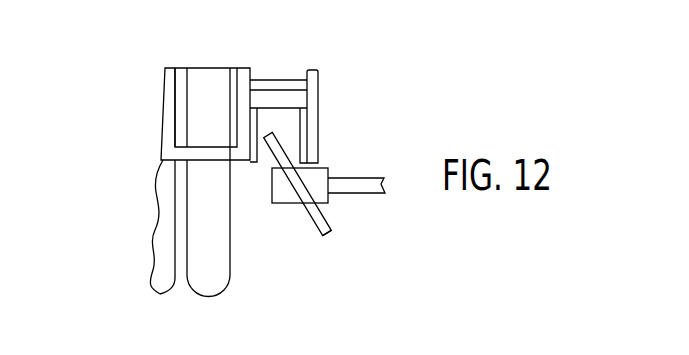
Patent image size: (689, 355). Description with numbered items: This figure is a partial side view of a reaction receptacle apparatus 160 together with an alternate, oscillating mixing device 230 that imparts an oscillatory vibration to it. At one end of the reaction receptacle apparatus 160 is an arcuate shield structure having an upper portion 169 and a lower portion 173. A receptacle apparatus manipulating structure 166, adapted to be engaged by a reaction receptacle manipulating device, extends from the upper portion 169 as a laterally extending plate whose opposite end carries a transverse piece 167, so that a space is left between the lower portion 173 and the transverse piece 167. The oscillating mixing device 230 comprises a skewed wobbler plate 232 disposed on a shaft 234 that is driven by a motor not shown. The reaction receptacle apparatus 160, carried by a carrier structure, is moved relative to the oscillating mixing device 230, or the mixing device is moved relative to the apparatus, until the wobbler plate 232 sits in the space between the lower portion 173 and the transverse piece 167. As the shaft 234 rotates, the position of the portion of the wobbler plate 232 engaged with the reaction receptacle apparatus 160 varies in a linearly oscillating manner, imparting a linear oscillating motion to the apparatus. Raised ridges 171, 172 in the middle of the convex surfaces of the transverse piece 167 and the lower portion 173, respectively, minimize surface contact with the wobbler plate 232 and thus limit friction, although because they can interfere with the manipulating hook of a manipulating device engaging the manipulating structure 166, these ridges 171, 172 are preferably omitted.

The reaction receptacle apparatus 160 is at (188, 63).
The receptacle apparatus manipulating structure 166 is at (329, 65).
The transverse piece 167 is at (320, 112).
The upper portion 169 is at (241, 101).
The raised ridge 171 is at (295, 142).
The raised ridge 172 is at (263, 150).
The lower portion 173 is at (241, 130).
The oscillating mixing device 230 is at (286, 212).
The skewed wobbler plate 232 is at (326, 236).
The shaft 234 is at (362, 194).